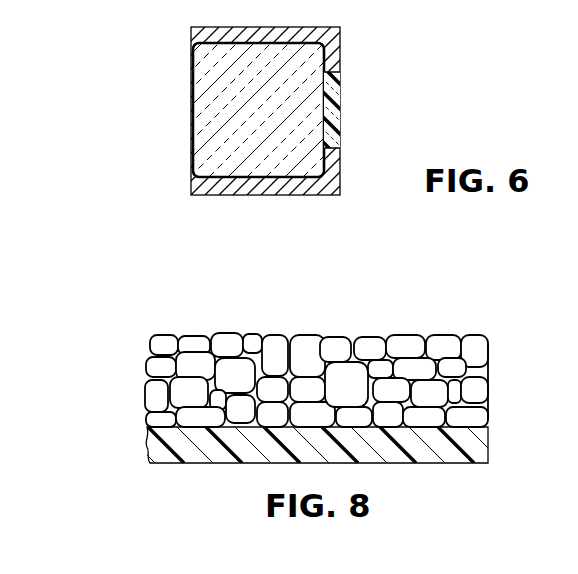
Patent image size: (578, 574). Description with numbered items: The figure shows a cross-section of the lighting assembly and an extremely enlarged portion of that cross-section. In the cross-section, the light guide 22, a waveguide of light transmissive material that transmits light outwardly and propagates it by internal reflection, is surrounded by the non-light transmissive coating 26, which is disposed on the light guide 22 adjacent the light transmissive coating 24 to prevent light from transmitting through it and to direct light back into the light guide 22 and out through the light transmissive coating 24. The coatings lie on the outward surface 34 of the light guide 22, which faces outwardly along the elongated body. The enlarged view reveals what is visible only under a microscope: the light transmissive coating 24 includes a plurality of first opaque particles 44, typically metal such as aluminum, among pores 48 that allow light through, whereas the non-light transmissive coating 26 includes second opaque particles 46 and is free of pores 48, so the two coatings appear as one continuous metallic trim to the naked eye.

In FIG. 6, the light guide 22 is at (257, 116).
In FIG. 6, the light transmissive coating 24 is at (340, 90).
In FIG. 8, the light transmissive coating 24 is at (308, 354).
In FIG. 6, the non-light transmissive coating 26 is at (340, 55).
In FIG. 8, the non-light transmissive coating 26 is at (492, 344).
In FIG. 6, the outward surface 34 is at (340, 165).
In FIG. 8, the outward surface 34 is at (483, 415).
In FIG. 8, the first opaque particles 44 is at (163, 340).
In FIG. 8, the second opaque particles 46 is at (343, 341).
In FIG. 8, the pores 48 is at (273, 355).